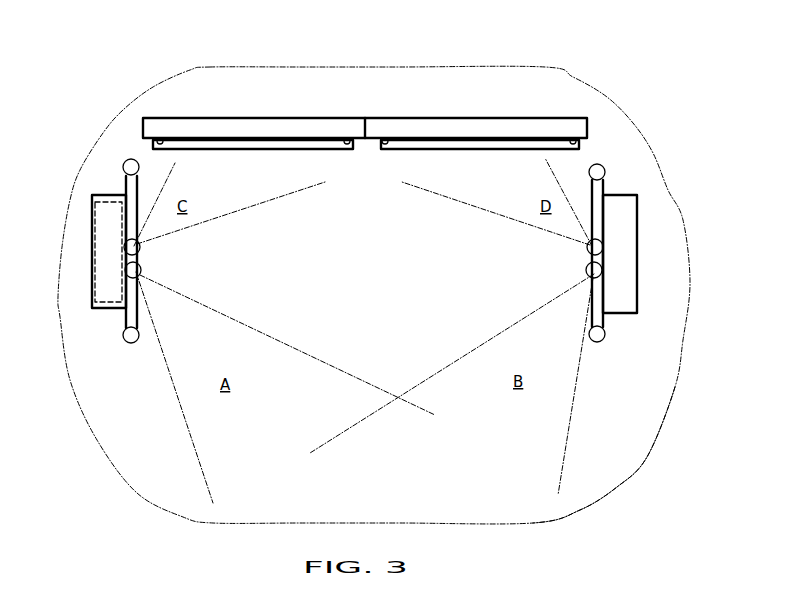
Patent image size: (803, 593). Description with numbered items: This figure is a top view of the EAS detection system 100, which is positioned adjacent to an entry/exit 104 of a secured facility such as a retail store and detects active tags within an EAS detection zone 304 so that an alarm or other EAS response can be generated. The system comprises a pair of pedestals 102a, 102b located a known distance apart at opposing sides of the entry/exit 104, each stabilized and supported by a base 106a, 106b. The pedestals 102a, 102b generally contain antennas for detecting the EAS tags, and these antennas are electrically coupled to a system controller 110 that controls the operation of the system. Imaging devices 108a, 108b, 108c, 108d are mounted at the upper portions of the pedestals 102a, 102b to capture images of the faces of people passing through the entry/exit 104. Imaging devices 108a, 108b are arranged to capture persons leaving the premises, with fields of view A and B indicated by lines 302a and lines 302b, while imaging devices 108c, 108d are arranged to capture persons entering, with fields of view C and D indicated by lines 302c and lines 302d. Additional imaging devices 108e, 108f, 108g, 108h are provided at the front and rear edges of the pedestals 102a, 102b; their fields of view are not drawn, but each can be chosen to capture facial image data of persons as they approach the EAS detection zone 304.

The EAS detection system 100 is at (636, 105).
The entry/exit 104 is at (499, 118).
The base 106a is at (92, 213).
The base 106b is at (645, 179).
The system controller 110 is at (108, 203).
The pedestal 102a is at (123, 317).
The pedestal 102b is at (607, 323).
The imaging device 108a is at (142, 273).
The imaging device 108b is at (586, 272).
The imaging device 108c is at (142, 250).
The imaging device 108d is at (586, 248).
The imaging device 108e is at (131, 344).
The imaging device 108f is at (603, 341).
The imaging device 108g is at (129, 159).
The imaging device 108h is at (599, 163).
The lines 302a is at (250, 325).
The lines 302b is at (460, 352).
The lines 302c is at (165, 183).
The lines 302d is at (548, 166).
The EAS detection zone 304 is at (617, 487).